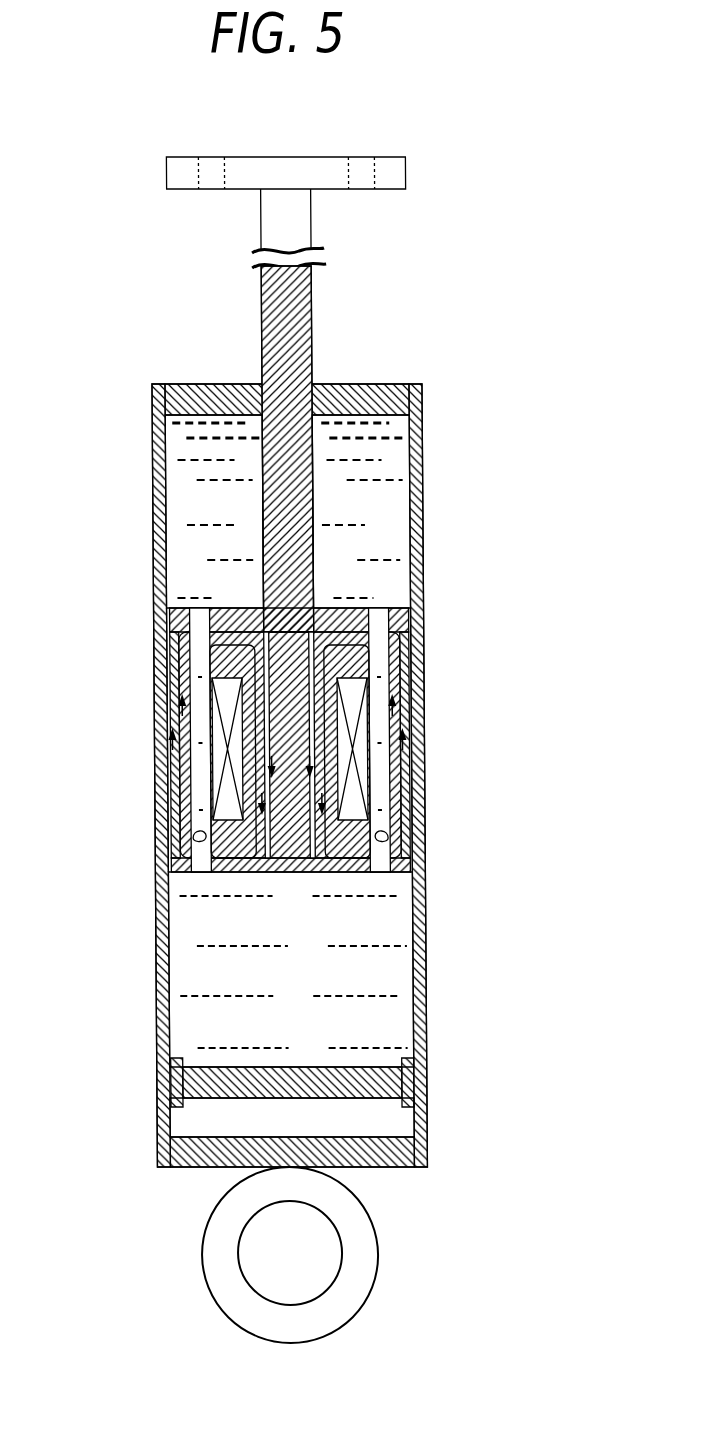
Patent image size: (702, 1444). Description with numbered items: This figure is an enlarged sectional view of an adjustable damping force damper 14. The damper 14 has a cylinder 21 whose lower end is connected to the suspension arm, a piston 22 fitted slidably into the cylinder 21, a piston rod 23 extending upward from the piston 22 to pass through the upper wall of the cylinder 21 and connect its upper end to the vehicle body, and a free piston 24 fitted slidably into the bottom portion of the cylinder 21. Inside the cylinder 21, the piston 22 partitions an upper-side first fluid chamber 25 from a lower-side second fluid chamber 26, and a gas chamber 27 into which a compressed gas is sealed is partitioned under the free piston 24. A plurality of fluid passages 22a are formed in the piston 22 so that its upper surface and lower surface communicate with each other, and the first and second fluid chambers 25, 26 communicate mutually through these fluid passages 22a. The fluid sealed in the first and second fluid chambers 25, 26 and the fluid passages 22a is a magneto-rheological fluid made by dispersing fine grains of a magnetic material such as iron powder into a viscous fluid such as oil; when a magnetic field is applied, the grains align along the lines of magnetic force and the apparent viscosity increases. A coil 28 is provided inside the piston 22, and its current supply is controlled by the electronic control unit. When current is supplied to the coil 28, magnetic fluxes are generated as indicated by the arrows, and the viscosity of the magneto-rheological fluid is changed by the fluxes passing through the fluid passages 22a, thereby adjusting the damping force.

The damper 14 is at (312, 750).
The cylinder 21 is at (421, 529).
The piston 22 is at (331, 599).
The fluid passages 22a is at (189, 838).
The piston rod 23 is at (272, 494).
The free piston 24 is at (310, 1072).
The first fluid chamber 25 is at (390, 502).
The second fluid chamber 26 is at (380, 977).
The gas chamber 27 is at (380, 1124).
The coil 28 is at (227, 693).